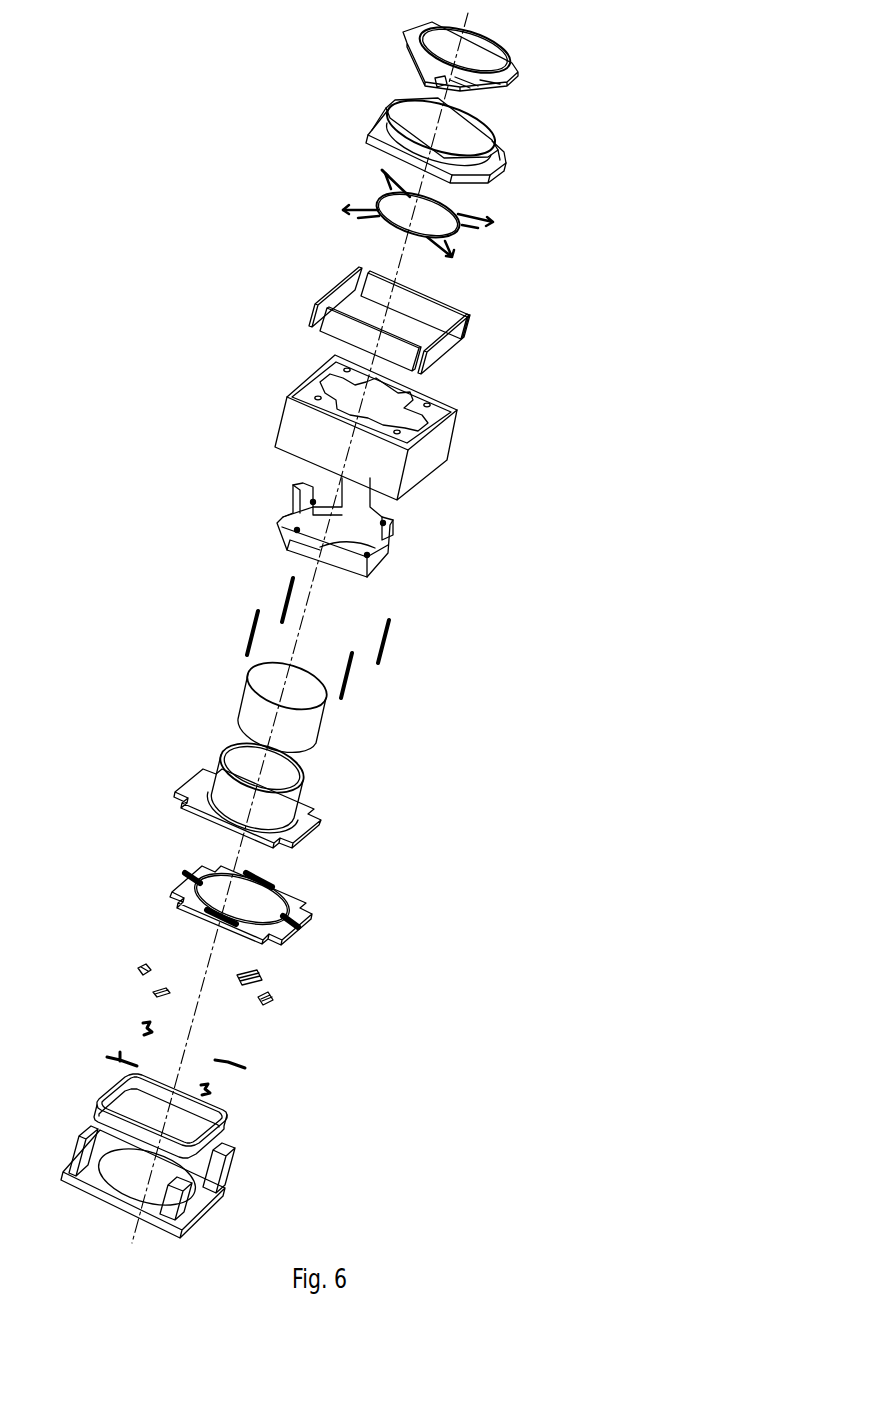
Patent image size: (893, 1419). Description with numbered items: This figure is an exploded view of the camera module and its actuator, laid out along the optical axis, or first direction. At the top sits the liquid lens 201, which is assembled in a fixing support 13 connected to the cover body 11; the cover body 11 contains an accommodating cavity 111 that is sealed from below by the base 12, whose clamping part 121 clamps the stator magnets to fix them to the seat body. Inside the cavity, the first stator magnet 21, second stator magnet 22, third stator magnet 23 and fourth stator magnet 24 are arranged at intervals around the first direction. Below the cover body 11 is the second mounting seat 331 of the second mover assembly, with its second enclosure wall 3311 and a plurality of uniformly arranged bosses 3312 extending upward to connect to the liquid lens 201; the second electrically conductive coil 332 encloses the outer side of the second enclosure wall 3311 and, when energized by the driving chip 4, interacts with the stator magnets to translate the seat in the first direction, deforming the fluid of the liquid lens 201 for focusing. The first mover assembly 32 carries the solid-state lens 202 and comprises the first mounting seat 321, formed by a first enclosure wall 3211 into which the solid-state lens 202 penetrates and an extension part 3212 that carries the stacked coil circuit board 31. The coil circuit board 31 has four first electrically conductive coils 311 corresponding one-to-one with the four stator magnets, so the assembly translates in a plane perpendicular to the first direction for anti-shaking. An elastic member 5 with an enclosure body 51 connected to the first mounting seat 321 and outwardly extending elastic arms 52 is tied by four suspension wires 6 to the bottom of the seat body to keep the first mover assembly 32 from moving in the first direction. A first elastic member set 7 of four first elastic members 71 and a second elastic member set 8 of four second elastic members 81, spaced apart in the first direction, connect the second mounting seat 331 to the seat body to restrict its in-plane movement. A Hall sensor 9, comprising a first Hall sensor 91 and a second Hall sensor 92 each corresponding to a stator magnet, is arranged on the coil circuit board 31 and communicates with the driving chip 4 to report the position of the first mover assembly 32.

The liquid lens 201 is at (510, 70).
The fixing support 13 is at (503, 147).
The elastic member 5 is at (411, 207).
The enclosure body 51 is at (386, 178).
The elastic arm 52 is at (375, 207).
The first elastic member 71 is at (342, 212).
The first elastic member set 7 is at (458, 255).
The first stator magnet 21 is at (340, 288).
The second stator magnet 22 is at (432, 297).
The third stator magnet 23 is at (448, 348).
The fourth stator magnet 24 is at (348, 332).
The cover body 11 is at (372, 427).
The accommodating cavity 111 is at (345, 402).
The second mounting seat 331 is at (375, 544).
The second enclosure wall 3311 is at (347, 575).
The boss 3312 is at (392, 528).
The suspension wire 6 is at (381, 635).
The solid-state lens 202 is at (313, 716).
The first mover assembly 32 is at (204, 833).
The first mounting seat 321 is at (222, 785).
The first enclosure wall 3211 is at (215, 775).
The extension part 3212 is at (198, 784).
The coil circuit board 31 is at (229, 876).
The first electrically conductive coil 311 is at (266, 880).
The second Hall sensor 92 is at (148, 962).
The driving chip 4 is at (258, 976).
The Hall sensor 9 is at (290, 1004).
The first Hall sensor 91 is at (266, 1006).
The second elastic member set 8 is at (133, 1055).
The second elastic member 81 is at (228, 1060).
The second electrically conductive coil 332 is at (213, 1107).
The base 12 is at (166, 1184).
The clamping part 121 is at (235, 1150).